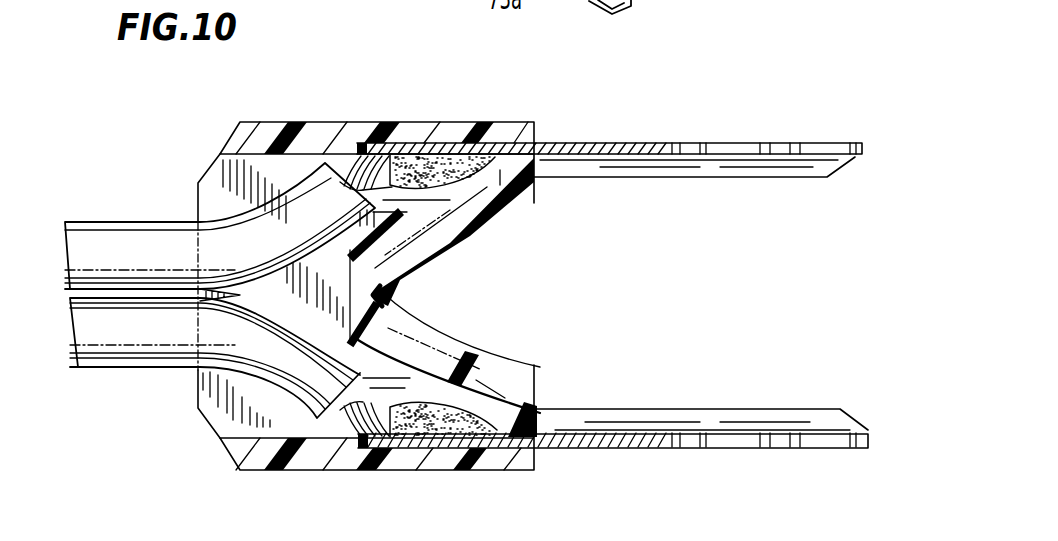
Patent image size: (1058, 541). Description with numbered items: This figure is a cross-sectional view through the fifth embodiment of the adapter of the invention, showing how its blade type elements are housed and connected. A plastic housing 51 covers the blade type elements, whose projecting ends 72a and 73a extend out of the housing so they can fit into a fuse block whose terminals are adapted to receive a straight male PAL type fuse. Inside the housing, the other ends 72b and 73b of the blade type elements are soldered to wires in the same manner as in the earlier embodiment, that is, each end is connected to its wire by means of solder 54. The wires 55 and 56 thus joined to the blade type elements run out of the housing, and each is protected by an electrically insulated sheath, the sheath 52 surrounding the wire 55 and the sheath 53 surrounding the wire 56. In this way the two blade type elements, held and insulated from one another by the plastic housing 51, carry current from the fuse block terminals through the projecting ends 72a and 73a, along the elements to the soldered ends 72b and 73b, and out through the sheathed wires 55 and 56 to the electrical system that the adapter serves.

The plastic housing 51 is at (457, 247).
The electrically insulated sheath 52 is at (132, 250).
The electrically insulated sheath 53 is at (157, 330).
The solder 54 is at (470, 162).
The wire 55 is at (357, 143).
The wire 56 is at (372, 448).
The projecting end 72a is at (777, 168).
The projecting end 72b is at (410, 143).
The projecting end 73a is at (701, 460).
The covered end 73b is at (440, 448).